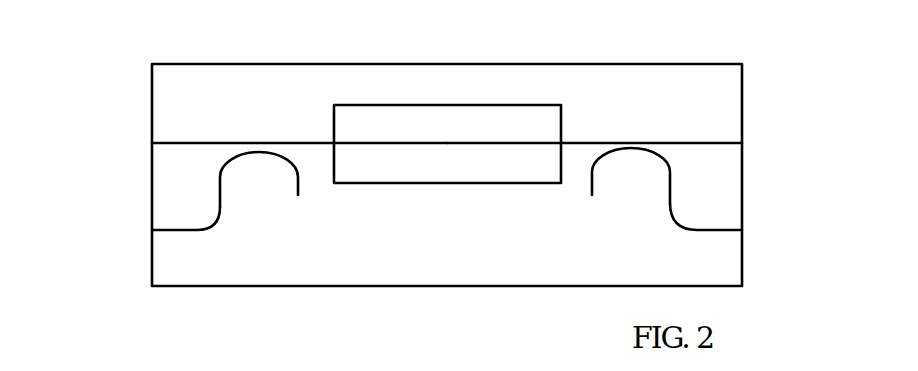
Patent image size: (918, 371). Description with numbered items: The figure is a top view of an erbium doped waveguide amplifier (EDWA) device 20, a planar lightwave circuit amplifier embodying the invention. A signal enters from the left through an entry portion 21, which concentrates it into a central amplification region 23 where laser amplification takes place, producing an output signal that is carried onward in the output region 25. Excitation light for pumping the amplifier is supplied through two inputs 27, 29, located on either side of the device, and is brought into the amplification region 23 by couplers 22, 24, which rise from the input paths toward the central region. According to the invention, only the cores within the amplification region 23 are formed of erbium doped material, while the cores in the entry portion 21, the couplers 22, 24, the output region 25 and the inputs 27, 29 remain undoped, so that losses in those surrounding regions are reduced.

The erbium doped waveguide amplifier device 20 is at (745, 55).
The entry portion 21 is at (152, 143).
The coupler 22 is at (260, 177).
The amplification region 23 is at (445, 100).
The coupler 24 is at (633, 173).
The output region 25 is at (678, 137).
The excitation light input 27 is at (152, 230).
The excitation light input 29 is at (745, 231).